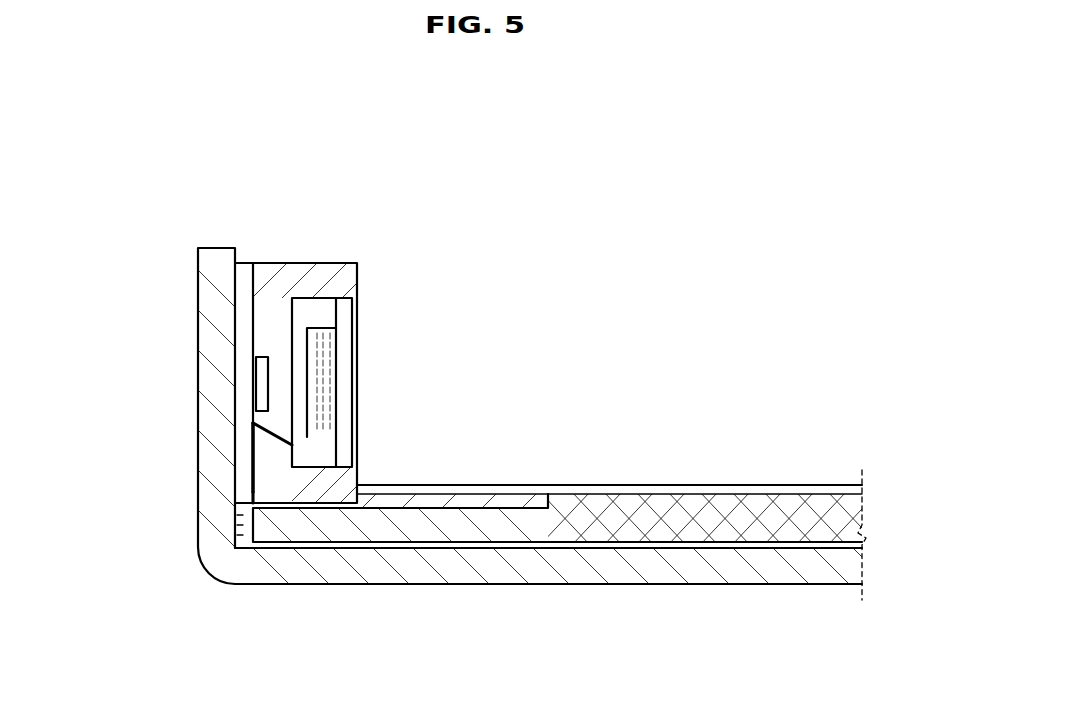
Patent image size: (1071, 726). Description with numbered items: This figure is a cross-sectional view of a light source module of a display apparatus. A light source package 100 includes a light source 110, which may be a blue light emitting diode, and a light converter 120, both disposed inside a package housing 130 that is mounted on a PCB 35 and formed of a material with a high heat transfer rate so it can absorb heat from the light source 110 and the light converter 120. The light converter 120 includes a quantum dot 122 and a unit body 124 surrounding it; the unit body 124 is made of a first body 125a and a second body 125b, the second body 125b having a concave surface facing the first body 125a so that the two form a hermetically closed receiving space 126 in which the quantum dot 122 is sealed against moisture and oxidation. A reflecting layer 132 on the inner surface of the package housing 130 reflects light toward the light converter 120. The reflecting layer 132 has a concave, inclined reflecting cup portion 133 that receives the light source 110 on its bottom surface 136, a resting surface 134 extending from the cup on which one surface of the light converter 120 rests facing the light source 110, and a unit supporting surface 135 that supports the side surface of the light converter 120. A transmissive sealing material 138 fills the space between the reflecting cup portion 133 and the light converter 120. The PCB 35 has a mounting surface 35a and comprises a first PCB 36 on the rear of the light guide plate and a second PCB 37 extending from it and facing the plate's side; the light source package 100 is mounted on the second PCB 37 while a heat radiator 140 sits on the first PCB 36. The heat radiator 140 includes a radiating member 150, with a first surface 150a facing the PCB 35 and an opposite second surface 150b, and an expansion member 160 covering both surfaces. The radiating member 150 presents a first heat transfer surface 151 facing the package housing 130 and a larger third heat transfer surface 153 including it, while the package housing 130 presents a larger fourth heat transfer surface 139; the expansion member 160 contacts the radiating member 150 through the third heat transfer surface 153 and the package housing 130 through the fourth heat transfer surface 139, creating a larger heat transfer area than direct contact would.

The light source package 100 is at (290, 340).
The light source 110 is at (256, 298).
The light converter 120 is at (331, 364).
The quantum dot 122 is at (308, 399).
The unit body 124 is at (419, 377).
The first body 125a is at (345, 372).
The second body 125b is at (327, 320).
The receiving space 126 is at (333, 397).
The package housing 130 is at (338, 273).
The reflecting layer 132 is at (170, 474).
The reflecting cup portion 133 is at (273, 430).
The resting surface 134 is at (290, 455).
The unit supporting surface 135 is at (265, 498).
The bottom surface 136 is at (260, 342).
The transmissive sealing material 138 is at (289, 330).
The fourth heat transfer surface 139 is at (360, 490).
The heat radiator 140 is at (565, 558).
The radiating member 150 is at (565, 533).
The first surface 150a is at (726, 545).
The second surface 150b is at (745, 485).
The first heat transfer surface 151 is at (298, 505).
The third heat transfer surface 153 is at (462, 500).
The expansion member 160 is at (523, 497).
The PCB 35 is at (504, 477).
The mounting surface 35a is at (235, 311).
The first PCB 36 is at (288, 572).
The second PCB 37 is at (205, 525).